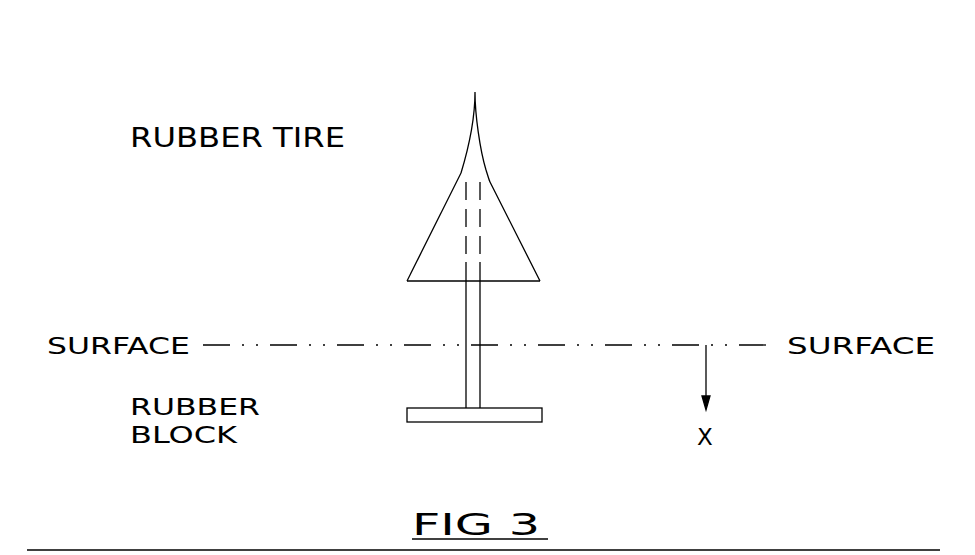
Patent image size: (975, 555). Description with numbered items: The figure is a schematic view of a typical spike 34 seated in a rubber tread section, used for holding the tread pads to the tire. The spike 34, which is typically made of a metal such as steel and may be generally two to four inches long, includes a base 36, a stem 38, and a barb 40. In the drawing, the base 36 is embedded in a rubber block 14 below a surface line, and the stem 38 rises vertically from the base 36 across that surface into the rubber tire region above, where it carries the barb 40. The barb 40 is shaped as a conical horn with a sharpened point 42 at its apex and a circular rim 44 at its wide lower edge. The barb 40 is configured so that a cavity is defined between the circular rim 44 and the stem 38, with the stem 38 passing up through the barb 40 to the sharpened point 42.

The rubber block 14 is at (295, 447).
The spike 34 is at (473, 174).
The base 36 is at (399, 409).
The stem 38 is at (480, 325).
The barb 40 is at (492, 185).
The sharpened point 42 is at (475, 97).
The circular rim 44 is at (423, 282).